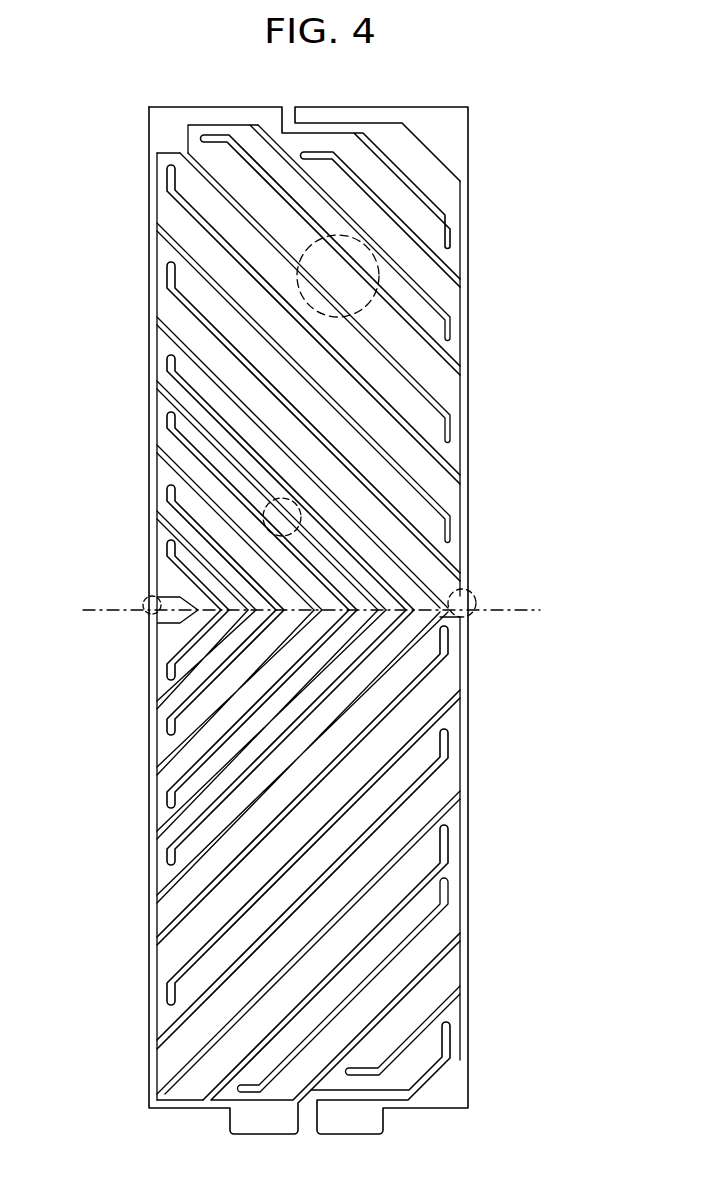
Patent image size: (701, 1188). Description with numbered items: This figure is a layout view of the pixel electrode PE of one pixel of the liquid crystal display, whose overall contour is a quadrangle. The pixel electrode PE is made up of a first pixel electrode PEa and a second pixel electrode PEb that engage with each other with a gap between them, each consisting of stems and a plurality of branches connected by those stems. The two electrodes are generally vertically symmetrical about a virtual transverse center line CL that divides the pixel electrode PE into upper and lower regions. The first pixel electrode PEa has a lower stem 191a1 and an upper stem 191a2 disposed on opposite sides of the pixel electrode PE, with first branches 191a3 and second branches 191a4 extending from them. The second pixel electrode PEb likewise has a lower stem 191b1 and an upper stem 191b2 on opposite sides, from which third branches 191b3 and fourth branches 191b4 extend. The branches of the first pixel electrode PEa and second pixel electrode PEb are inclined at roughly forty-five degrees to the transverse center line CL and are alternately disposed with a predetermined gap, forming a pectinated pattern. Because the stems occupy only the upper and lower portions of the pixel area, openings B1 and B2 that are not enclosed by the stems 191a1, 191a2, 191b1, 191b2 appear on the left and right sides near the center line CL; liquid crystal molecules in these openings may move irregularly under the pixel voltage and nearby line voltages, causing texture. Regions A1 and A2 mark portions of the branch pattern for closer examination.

The pixel electrode PE is at (72, 975).
The first pixel electrode PEa is at (178, 978).
The second pixel electrode PEb is at (178, 1044).
The lower stem 191a1 is at (468, 860).
The upper stem 191a2 is at (149, 303).
The first branches 191a3 is at (438, 795).
The second branches 191a4 is at (192, 432).
The lower stem 191b1 is at (149, 853).
The upper stem 191b2 is at (468, 197).
The third branches 191b3 is at (235, 780).
The fourth branches 191b4 is at (402, 380).
The region A1 is at (372, 310).
The region A2 is at (266, 514).
The opening B1 is at (147, 598).
The opening B2 is at (473, 590).
The transverse center line CL is at (295, 611).